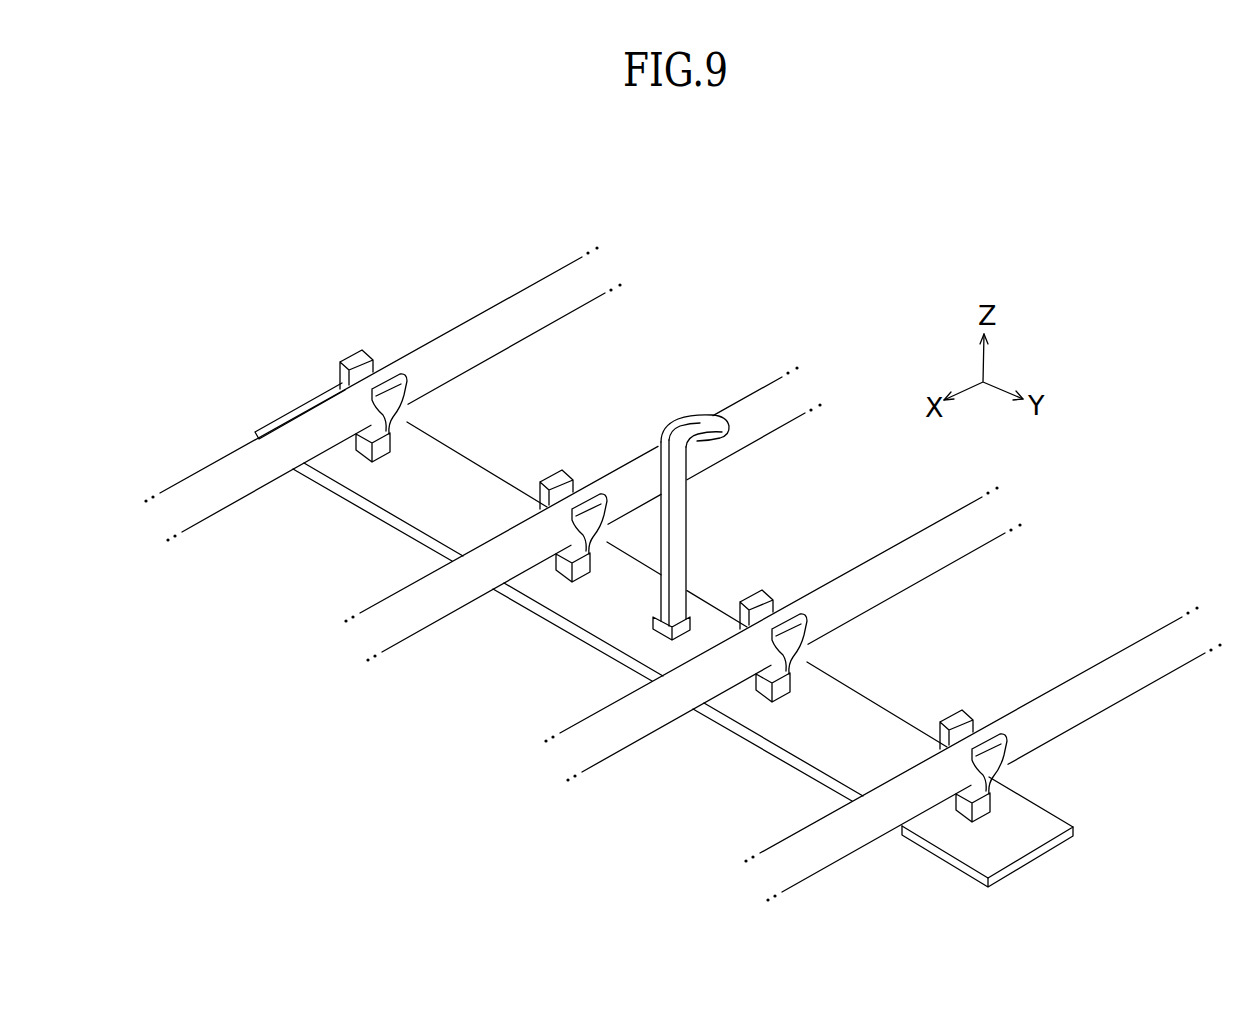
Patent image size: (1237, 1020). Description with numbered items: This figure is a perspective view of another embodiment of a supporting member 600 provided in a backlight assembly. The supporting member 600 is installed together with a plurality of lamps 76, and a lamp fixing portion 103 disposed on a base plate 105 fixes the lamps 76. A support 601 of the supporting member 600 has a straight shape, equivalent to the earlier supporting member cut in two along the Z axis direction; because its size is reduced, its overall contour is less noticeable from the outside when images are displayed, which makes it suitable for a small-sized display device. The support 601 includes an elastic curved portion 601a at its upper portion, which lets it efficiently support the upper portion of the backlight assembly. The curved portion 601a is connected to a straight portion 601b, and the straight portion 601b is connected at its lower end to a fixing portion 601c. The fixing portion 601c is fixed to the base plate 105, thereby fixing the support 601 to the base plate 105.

The lamps 76 is at (1137, 687).
The lamp fixing portion 103 is at (961, 804).
The base plate 105 is at (1030, 823).
The supporting member 600 is at (742, 561).
The support 601 is at (677, 387).
The curved portion 601a is at (706, 446).
The straight portion 601b is at (661, 587).
The fixing portion 601c is at (656, 629).